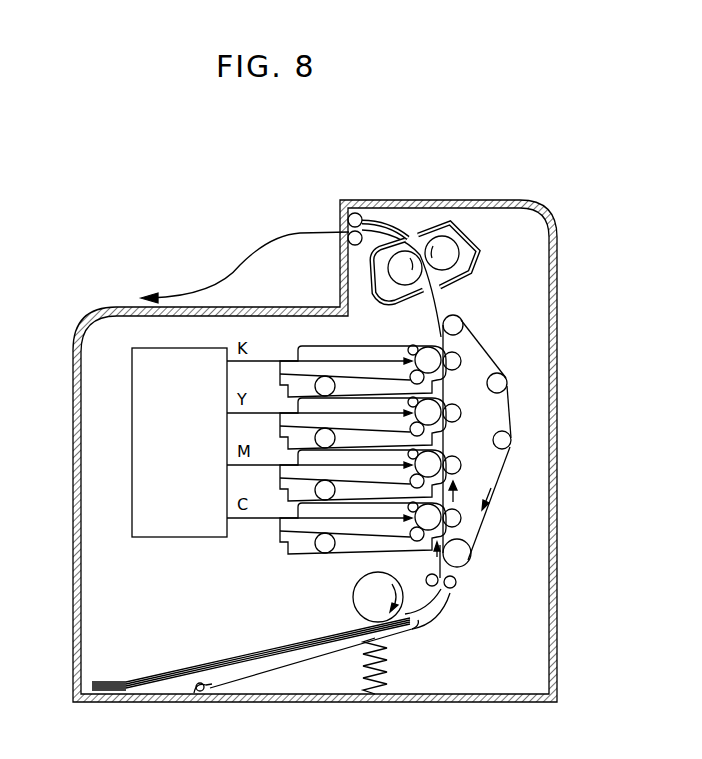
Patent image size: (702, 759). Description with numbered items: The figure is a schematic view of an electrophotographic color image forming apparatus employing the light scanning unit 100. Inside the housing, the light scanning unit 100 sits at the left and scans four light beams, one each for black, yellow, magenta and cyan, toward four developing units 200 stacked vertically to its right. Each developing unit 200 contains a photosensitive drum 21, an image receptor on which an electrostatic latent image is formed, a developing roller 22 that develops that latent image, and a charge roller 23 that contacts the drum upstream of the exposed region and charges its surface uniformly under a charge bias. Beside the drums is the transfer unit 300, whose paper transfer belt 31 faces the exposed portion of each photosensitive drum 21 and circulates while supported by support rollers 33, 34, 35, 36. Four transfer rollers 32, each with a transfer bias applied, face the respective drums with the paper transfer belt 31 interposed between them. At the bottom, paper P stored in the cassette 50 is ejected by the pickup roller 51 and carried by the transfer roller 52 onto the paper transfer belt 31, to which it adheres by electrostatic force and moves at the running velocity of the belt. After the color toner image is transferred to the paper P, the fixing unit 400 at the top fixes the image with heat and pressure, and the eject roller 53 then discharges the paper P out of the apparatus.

The light scanning unit 100 is at (128, 451).
The developing unit 200 is at (381, 343).
The photosensitive drum 21 is at (424, 347).
The developing roller 22 is at (411, 374).
The charge roller 23 is at (410, 346).
The transfer unit 300 is at (526, 428).
The paper transfer belt 31 is at (462, 361).
The transfer roller 32 is at (467, 513).
The support roller 33 is at (471, 555).
The support roller 34 is at (464, 325).
The support roller 35 is at (512, 440).
The support roller 36 is at (508, 383).
The fixing unit 400 is at (488, 252).
The cassette 50 is at (269, 641).
The pickup roller 51 is at (377, 596).
The transfer roller 52 is at (427, 578).
The eject roller 53 is at (356, 212).
The paper P is at (267, 650).